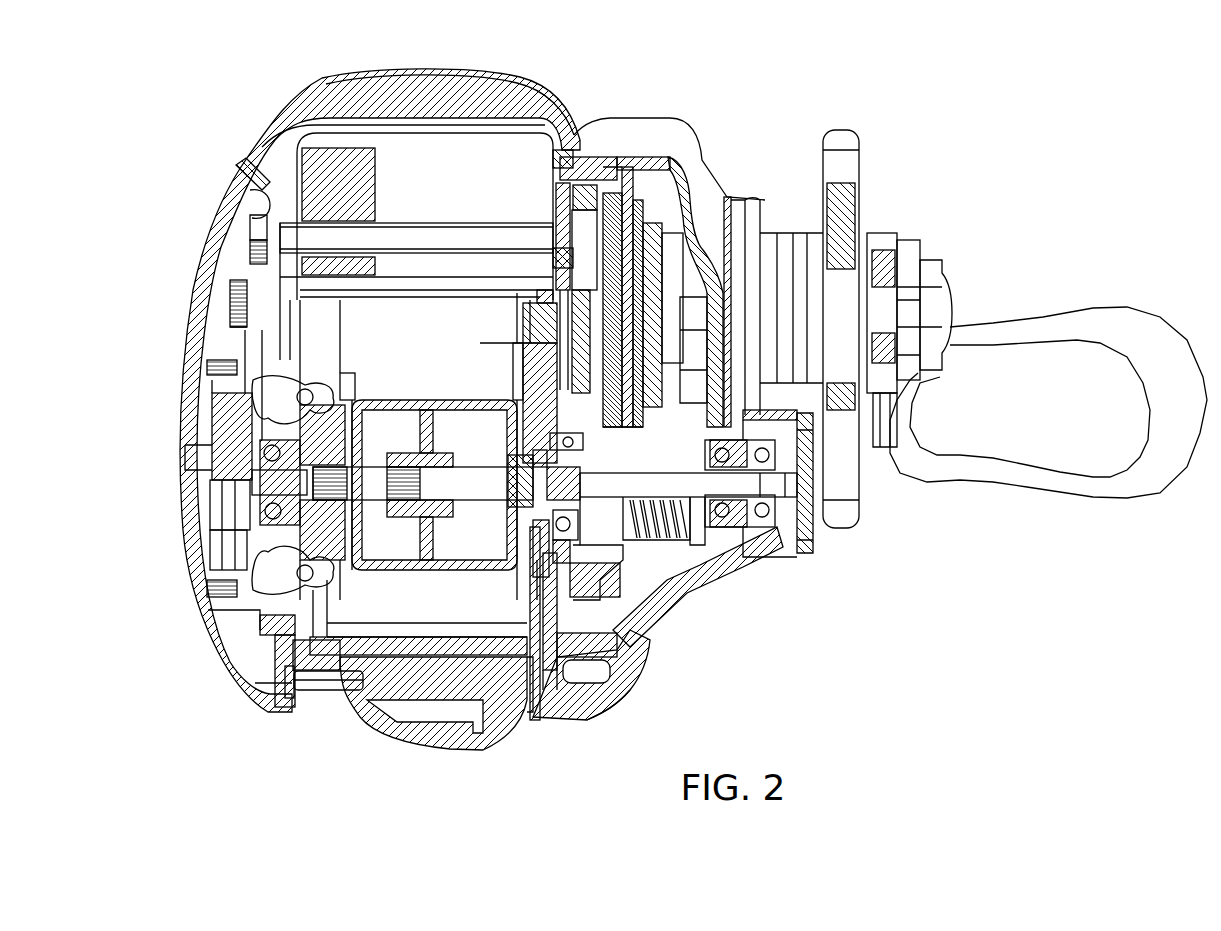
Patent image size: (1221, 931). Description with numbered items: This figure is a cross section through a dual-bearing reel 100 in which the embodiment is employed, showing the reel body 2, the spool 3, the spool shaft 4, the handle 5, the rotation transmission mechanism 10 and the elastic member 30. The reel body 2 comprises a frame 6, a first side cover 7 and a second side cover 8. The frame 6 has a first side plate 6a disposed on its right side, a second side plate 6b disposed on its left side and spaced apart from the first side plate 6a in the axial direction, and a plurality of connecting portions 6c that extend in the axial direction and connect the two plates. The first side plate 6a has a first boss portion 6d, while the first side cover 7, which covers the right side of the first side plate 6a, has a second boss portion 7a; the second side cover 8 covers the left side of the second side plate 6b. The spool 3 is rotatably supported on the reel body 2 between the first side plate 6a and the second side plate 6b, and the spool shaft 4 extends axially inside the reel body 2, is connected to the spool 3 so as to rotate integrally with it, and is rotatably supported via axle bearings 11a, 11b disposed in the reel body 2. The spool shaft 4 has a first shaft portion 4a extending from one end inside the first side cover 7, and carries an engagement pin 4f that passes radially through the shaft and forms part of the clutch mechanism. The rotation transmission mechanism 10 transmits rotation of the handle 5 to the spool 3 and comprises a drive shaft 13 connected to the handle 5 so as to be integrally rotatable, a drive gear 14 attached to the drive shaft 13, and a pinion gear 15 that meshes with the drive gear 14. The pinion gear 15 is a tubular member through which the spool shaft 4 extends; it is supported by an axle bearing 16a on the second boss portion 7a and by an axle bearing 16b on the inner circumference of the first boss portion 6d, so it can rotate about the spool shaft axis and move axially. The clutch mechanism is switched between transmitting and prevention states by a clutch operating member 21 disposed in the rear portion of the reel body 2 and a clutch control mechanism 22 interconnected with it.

The dual-bearing reel 100 is at (183, 131).
The reel body 2 is at (266, 110).
The second side cover 8 is at (211, 237).
The spool 3 is at (386, 388).
The drive shaft 13 is at (528, 456).
The axle bearing 16b is at (538, 290).
The elastic member 30 is at (512, 454).
The spool shaft 4 is at (478, 510).
The engagement pin 4f is at (540, 505).
The axle bearing 11b is at (243, 467).
The frame 6 is at (572, 140).
The second side plate 6b is at (278, 711).
The clutch operating member 21 is at (338, 706).
The connecting portions 6c is at (513, 705).
The first side plate 6a is at (562, 697).
The first boss portion 6d is at (637, 685).
The drive gear 14 is at (640, 178).
The rotation transmission mechanism 10 is at (671, 240).
The axle bearing 16a is at (762, 410).
The handle 5 is at (1083, 496).
The first shaft portion 4a is at (735, 484).
The axle bearing 11a is at (782, 507).
The second boss portion 7a is at (763, 551).
The pinion gear 15 is at (690, 534).
The clutch control mechanism 22 is at (645, 553).
The first side cover 7 is at (693, 592).